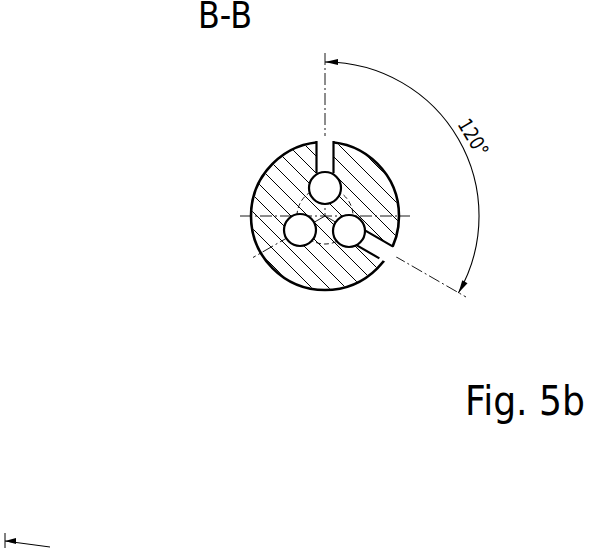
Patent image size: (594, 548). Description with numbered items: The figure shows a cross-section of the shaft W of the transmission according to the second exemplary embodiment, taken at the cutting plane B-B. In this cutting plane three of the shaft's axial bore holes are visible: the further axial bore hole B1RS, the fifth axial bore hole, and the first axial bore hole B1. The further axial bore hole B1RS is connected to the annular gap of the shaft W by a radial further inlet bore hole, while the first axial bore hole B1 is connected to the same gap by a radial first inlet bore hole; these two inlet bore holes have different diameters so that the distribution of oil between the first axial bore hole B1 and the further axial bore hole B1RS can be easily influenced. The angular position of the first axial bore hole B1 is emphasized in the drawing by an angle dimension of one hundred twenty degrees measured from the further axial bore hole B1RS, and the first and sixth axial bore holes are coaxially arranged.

The shaft W is at (263, 198).
The first axial bore hole B1 is at (347, 247).
The further axial bore hole B1RS is at (310, 183).